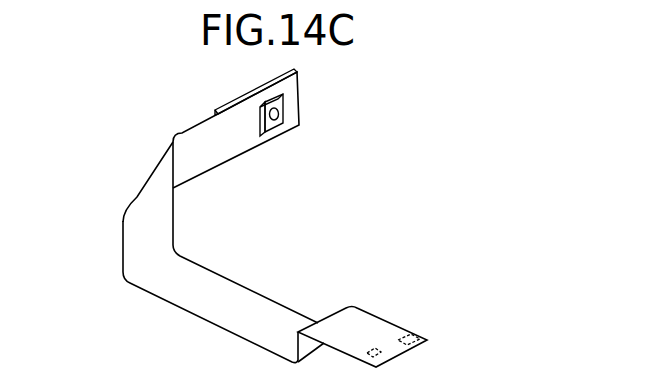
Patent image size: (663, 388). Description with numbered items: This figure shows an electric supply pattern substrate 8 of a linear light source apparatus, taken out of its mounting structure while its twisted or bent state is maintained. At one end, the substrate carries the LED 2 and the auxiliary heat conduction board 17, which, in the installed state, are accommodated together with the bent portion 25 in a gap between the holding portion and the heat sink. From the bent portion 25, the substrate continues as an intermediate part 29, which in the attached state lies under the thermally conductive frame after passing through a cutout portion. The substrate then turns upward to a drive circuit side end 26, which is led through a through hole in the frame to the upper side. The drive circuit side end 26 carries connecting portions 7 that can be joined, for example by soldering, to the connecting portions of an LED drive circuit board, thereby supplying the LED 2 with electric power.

The auxiliary heat conduction board 17 is at (246, 95).
The LED 2 is at (285, 114).
The bent portion 25 is at (150, 188).
The intermediate part 29 is at (232, 305).
The drive circuit side end 26 is at (358, 323).
The connecting portions 7 is at (373, 351).
The electric supply pattern substrate 8 is at (338, 157).